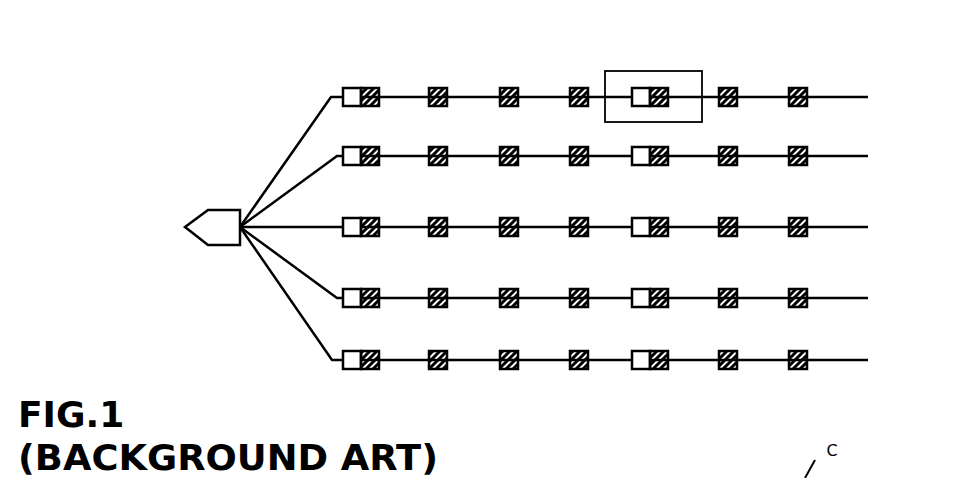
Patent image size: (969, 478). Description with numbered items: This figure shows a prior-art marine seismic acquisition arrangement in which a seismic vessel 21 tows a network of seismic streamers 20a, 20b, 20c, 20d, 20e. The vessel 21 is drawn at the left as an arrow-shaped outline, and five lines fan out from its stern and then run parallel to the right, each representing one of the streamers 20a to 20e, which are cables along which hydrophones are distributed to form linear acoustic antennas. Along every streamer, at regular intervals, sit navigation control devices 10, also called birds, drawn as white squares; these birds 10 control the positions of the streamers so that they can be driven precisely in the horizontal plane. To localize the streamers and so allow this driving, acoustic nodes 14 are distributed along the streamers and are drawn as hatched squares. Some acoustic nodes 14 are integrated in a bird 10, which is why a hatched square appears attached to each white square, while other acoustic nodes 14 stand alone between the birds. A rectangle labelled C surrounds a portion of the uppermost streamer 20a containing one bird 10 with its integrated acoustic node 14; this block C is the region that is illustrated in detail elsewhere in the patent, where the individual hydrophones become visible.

The navigation control device 10 is at (353, 86).
The acoustic node 14 is at (378, 86).
The seismic streamer 20a is at (328, 100).
The seismic streamer 20b is at (306, 178).
The seismic streamer 20c is at (289, 224).
The seismic streamer 20d is at (282, 263).
The seismic streamer 20e is at (300, 323).
The seismic vessel 21 is at (222, 257).
The block C is at (700, 70).